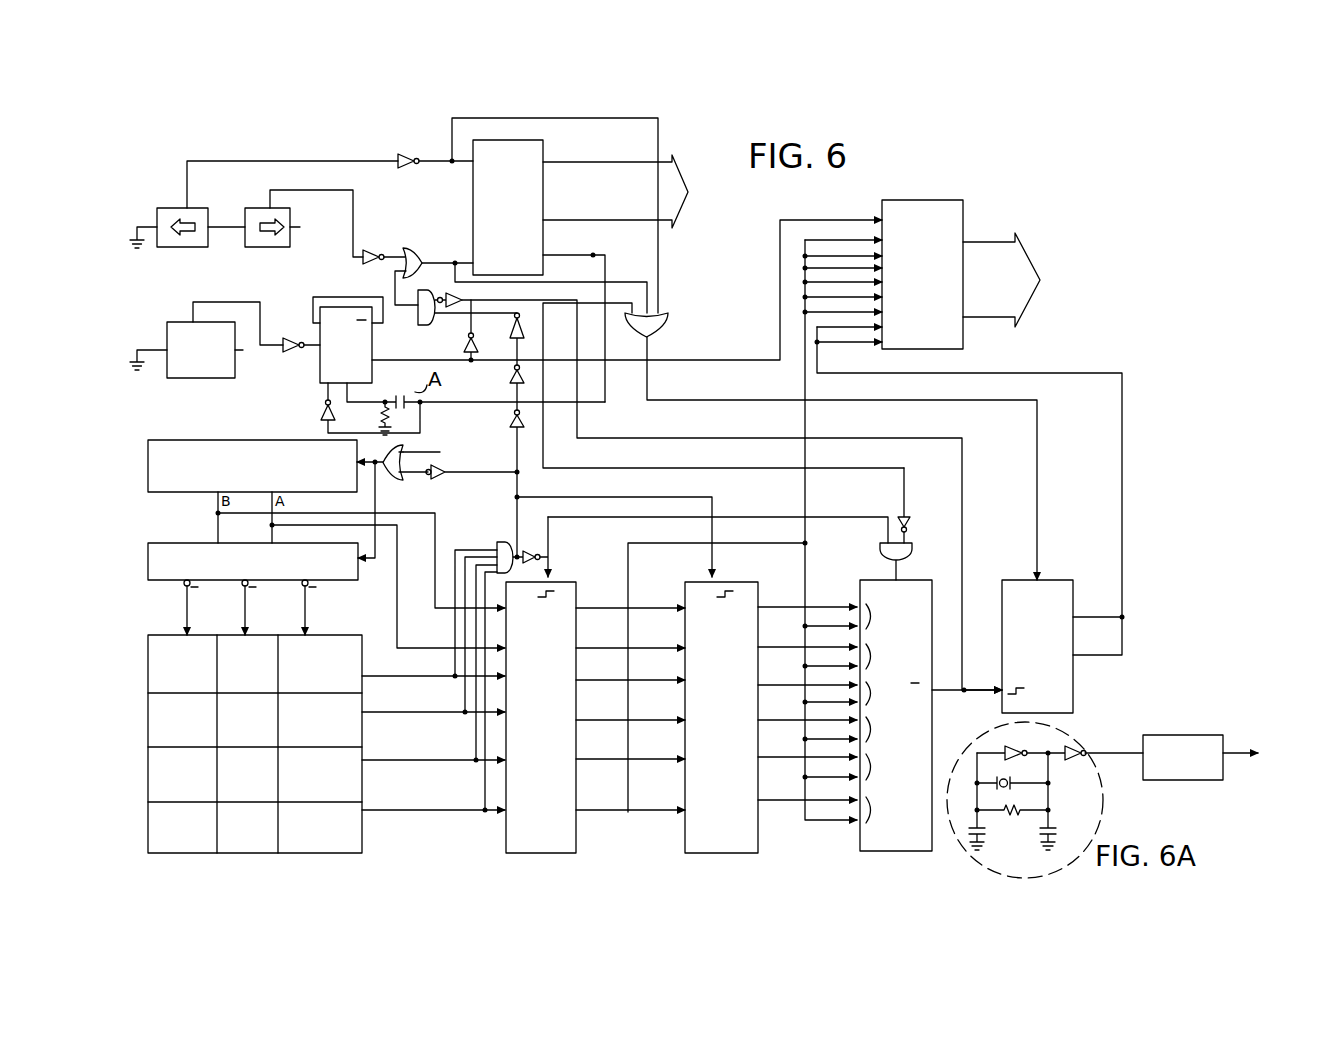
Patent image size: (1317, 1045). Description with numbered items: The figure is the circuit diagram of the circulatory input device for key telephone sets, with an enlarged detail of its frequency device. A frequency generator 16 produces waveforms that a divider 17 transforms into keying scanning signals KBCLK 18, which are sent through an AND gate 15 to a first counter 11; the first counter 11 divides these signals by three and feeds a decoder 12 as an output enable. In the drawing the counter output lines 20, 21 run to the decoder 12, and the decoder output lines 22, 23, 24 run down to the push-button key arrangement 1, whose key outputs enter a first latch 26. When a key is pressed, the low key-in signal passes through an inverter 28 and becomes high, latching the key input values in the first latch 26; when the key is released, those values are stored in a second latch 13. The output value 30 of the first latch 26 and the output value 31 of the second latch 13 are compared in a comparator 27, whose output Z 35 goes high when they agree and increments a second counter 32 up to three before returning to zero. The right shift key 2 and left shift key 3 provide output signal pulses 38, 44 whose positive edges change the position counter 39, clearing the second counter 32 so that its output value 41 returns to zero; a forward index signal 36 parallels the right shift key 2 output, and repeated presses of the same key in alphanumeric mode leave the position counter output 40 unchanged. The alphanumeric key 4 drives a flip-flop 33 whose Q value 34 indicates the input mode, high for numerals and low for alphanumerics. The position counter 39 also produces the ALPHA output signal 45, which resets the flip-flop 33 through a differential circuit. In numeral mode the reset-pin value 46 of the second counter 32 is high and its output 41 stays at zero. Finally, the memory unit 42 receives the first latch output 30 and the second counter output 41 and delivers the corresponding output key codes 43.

In FIG. 6, the push-button key arrangement 1 is at (152, 642).
In FIG. 6, the right shift key 2 is at (257, 246).
In FIG. 6, the left shift key 3 is at (170, 246).
In FIG. 6, the alphanumeric key 4 is at (190, 378).
In FIG. 6, the first counter 11 is at (158, 440).
In FIG. 6, the decoder 12 is at (150, 545).
In FIG. 6, the second latch 13 is at (685, 845).
In FIG. 6, the AND gate 15 is at (392, 480).
In FIG. 6A, the frequency generator 16 is at (1062, 730).
In FIG. 6, the divider 17 is at (1172, 738).
In FIG. 6, the keying scanning signals KBCLK 18 is at (427, 452).
In FIG. 6, the counter output line A 20 is at (272, 525).
In FIG. 6, the counter output line B 21 is at (218, 530).
In FIG. 6, the decoder output line y0 22 is at (186, 622).
In FIG. 6, the decoder output line y1 23 is at (244, 622).
In FIG. 6, the decoder output line y2 24 is at (303, 622).
In FIG. 6, the first latch 26 is at (506, 845).
In FIG. 6, the comparator 27 is at (860, 845).
In FIG. 6, the inverter 28 is at (531, 548).
In FIG. 6, the output value of first latch 30 is at (588, 608).
In FIG. 6, the output value of second latch 31 is at (768, 607).
In FIG. 6, the second counter 32 is at (1008, 700).
In FIG. 6, the flip-flop 33 is at (333, 307).
In FIG. 6, the Q value of flip-flop 34 is at (374, 365).
In FIG. 6, the output Z of comparator 35 is at (937, 692).
In FIG. 6, the forward index signal 36 is at (415, 322).
In FIG. 6, the output signal pulse of right shift key 38 is at (418, 250).
In FIG. 6, the position counter 39 is at (545, 154).
In FIG. 6, the output of position counter 40 is at (677, 204).
In FIG. 6, the output value of second counter 41 is at (1084, 660).
In FIG. 6, the memory unit 42 is at (955, 218).
In FIG. 6, the output key codes 43 is at (975, 297).
In FIG. 6, the output signal pulse of left shift key 44 is at (430, 164).
In FIG. 6, the output signal ALPHA of position counter 45 is at (605, 273).
In FIG. 6, the output value from reset pin R of second counter 46 is at (1037, 503).